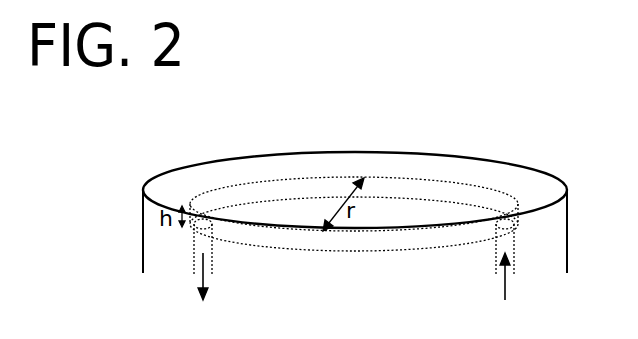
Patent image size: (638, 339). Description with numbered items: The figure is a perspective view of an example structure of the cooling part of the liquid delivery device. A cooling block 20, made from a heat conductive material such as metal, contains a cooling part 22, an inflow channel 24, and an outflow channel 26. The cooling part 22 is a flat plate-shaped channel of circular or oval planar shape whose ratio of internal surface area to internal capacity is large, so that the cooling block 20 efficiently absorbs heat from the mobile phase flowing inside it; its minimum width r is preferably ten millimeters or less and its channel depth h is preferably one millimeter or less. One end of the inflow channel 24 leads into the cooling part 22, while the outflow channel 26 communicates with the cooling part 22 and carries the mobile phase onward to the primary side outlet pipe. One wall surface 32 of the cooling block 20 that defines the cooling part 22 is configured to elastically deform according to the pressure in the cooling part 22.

The cooling block 20 is at (543, 168).
The cooling part 22 is at (400, 190).
The wall surface 32 is at (277, 182).
The inflow channel 24 is at (515, 258).
The outflow channel 26 is at (194, 264).